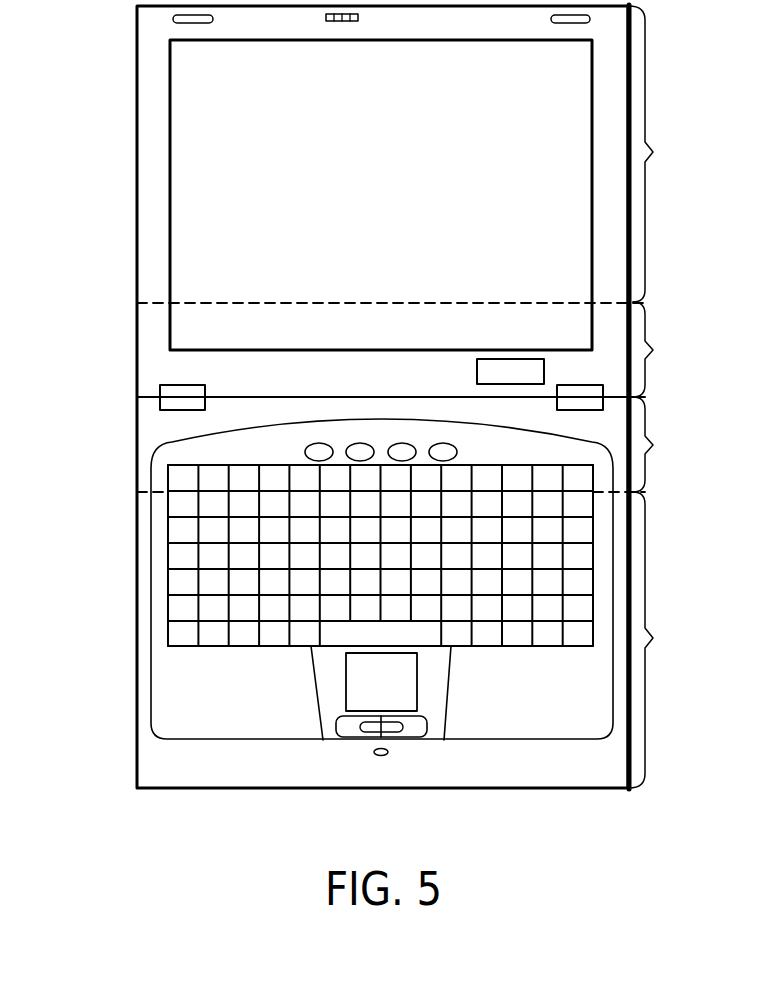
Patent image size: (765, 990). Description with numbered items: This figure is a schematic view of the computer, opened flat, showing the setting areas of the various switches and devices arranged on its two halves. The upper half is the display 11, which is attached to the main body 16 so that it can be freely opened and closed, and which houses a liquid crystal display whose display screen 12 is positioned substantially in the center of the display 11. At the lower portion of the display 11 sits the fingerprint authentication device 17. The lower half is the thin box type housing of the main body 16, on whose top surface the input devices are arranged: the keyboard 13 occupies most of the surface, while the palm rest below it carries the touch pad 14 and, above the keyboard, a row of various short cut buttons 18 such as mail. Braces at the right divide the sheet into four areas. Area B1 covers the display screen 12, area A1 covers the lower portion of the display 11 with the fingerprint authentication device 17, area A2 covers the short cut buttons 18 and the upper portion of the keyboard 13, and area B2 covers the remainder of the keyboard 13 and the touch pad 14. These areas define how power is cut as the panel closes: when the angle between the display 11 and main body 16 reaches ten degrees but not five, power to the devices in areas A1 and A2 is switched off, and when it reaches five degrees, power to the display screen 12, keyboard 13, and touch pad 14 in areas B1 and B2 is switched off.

The display 11 is at (136, 107).
The display screen 12 is at (170, 212).
The keyboard 13 is at (250, 628).
The touch pad 14 is at (405, 680).
The main body 16 is at (137, 719).
The fingerprint authentication device 17 is at (544, 365).
The short cut buttons 18 is at (402, 433).
The area B1 is at (658, 154).
The area A1 is at (660, 349).
The area A2 is at (660, 444).
The area B2 is at (658, 640).